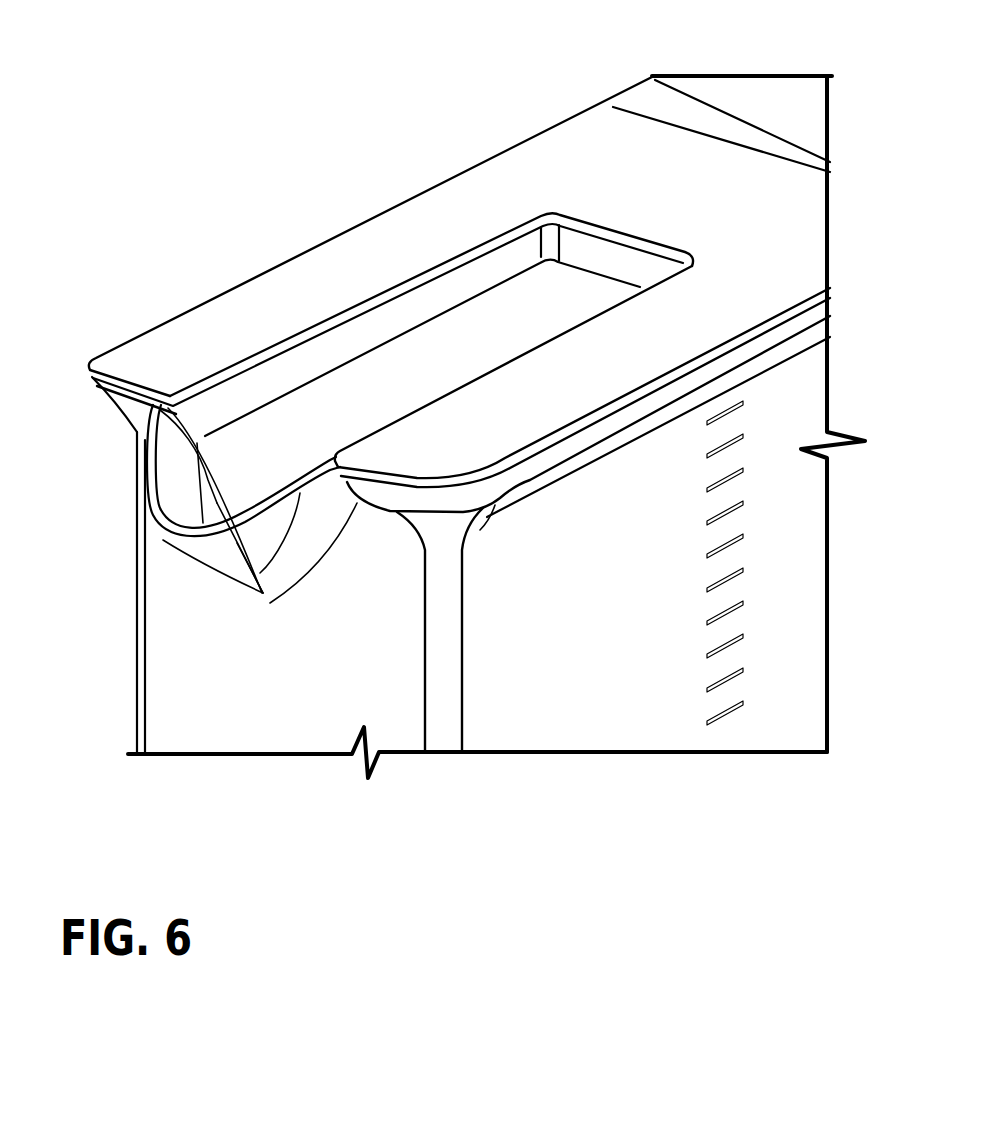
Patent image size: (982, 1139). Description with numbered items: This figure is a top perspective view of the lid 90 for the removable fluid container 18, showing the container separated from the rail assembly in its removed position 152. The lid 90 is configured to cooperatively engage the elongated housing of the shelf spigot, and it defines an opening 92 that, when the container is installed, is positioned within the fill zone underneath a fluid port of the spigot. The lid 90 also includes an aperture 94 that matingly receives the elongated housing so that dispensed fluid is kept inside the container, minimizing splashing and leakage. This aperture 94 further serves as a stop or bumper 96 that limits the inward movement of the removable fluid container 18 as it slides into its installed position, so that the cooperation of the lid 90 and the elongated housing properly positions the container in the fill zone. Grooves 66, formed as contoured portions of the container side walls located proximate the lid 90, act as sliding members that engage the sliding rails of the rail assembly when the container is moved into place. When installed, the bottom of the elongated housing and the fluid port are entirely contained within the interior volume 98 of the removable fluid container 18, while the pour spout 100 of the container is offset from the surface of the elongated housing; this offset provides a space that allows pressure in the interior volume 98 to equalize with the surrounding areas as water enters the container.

The removable fluid container 18 is at (129, 487).
The grooves 66 is at (794, 341).
The lid 90 is at (457, 223).
The opening 92 is at (408, 369).
The aperture 94 is at (257, 352).
The bumper 96 is at (620, 240).
The interior volume 98 is at (569, 632).
The pour spout 100 is at (170, 537).
The removed position 152 is at (474, 384).